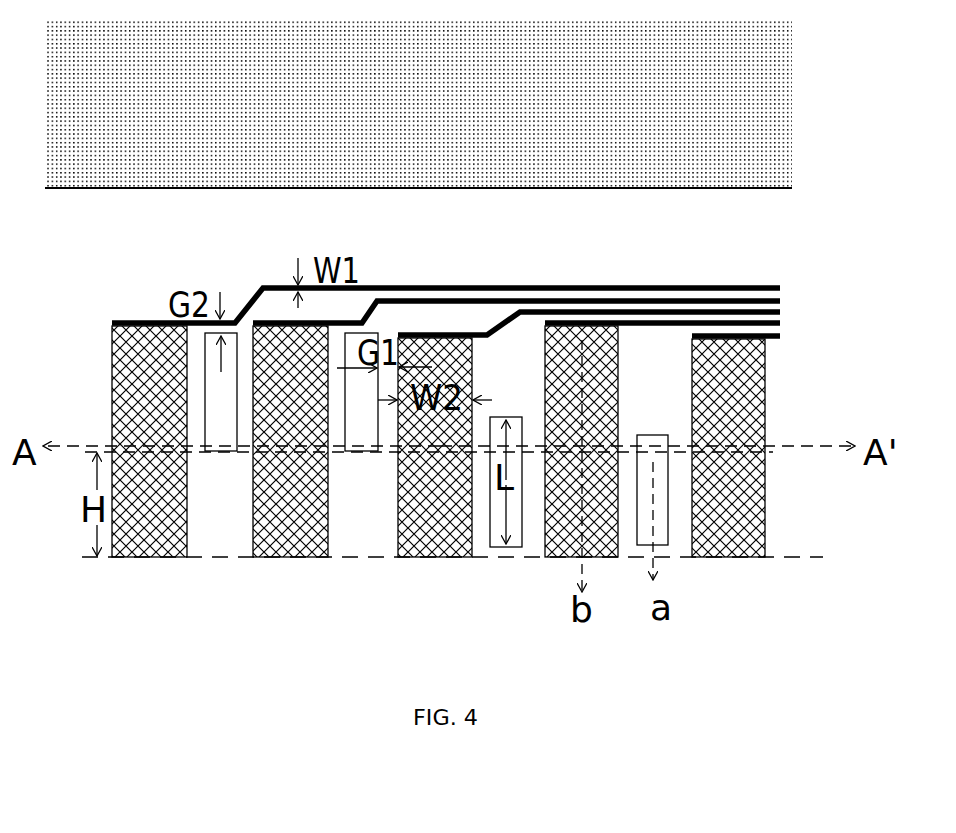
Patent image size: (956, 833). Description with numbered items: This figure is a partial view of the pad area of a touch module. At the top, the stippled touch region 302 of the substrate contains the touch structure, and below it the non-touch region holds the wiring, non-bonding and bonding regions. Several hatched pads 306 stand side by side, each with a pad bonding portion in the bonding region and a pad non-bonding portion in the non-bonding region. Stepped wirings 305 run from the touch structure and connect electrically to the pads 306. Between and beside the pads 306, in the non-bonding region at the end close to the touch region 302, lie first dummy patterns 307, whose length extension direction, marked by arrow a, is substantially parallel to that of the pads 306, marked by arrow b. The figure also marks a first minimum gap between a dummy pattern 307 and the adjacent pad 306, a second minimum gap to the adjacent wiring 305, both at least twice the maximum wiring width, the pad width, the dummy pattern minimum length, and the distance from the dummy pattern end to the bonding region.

The touch region 302 is at (418, 104).
The wiring 305 is at (718, 306).
The pad 306 is at (283, 540).
The first dummy pattern 307 is at (217, 432).